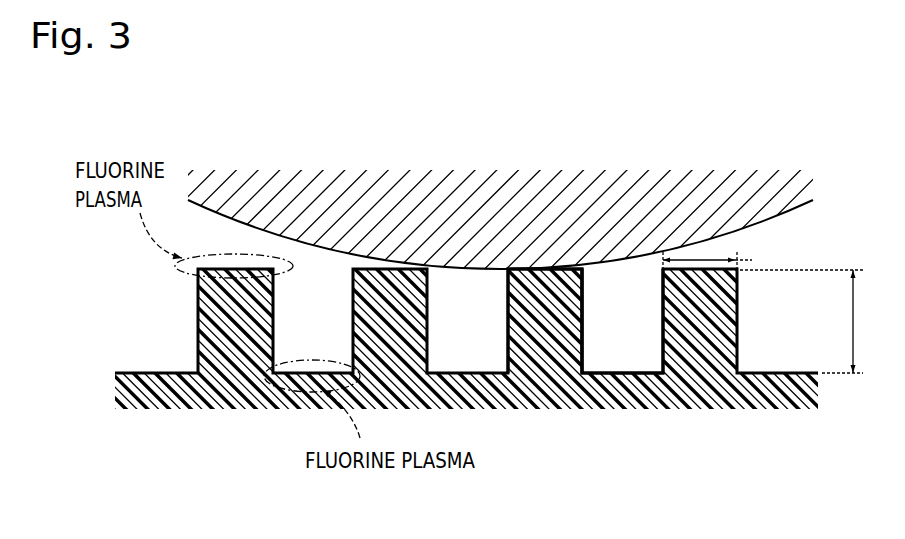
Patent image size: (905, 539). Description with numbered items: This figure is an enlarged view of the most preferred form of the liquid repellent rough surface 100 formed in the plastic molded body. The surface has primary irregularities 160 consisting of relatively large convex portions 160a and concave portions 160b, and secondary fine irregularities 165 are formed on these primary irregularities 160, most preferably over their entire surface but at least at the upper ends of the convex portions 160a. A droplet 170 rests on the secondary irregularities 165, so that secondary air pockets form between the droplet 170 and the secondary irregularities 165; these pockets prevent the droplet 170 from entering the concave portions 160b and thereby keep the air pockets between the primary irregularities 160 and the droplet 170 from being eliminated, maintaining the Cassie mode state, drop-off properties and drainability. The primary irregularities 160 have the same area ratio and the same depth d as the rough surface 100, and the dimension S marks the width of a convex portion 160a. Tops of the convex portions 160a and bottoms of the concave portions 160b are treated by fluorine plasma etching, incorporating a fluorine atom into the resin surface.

The rough surface 100 is at (168, 360).
The primary irregularities 160 is at (643, 473).
The convex portions 160a is at (547, 323).
The concave portions 160b is at (627, 330).
The secondary fine irregularities 165 is at (443, 373).
The droplet 170 is at (750, 210).
The protrusion width S is at (714, 260).
The depth of the irregularities d is at (801, 321).